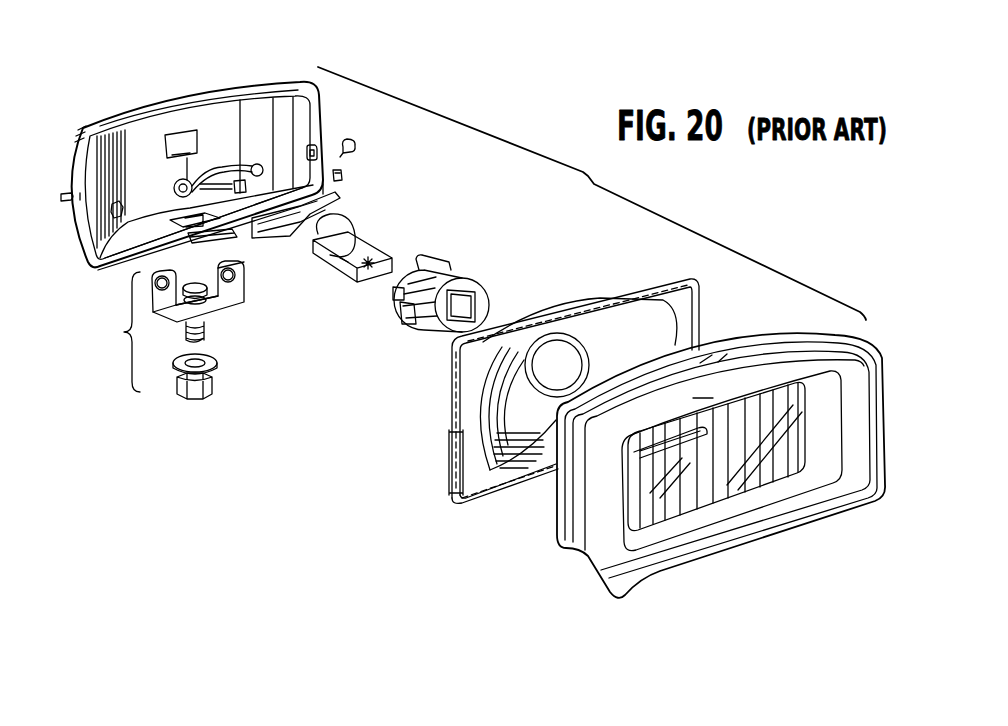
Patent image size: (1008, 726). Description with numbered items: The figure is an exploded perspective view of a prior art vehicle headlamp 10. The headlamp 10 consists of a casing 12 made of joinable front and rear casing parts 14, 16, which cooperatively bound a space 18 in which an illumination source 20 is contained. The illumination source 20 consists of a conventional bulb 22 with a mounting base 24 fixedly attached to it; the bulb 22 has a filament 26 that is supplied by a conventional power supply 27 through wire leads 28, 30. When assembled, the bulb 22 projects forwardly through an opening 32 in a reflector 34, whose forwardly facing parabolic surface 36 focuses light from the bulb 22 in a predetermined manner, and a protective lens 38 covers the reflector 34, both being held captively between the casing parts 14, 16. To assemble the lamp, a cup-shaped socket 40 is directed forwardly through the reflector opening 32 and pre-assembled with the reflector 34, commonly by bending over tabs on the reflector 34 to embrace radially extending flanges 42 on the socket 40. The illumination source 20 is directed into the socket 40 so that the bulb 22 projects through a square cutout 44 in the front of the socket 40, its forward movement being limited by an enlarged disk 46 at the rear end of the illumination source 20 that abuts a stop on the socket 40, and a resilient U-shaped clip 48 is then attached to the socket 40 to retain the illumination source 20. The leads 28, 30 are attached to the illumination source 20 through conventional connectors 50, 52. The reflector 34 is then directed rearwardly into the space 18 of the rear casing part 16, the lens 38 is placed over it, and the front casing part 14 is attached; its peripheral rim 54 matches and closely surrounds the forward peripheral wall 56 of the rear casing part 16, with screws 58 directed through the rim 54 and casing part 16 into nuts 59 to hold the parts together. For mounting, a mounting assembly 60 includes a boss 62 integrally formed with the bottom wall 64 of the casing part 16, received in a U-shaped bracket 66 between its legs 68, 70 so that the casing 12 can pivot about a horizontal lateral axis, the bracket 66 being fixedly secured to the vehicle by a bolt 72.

The vehicle headlamp 10 is at (552, 137).
The casing 12 is at (214, 87).
The front casing part 14 is at (716, 453).
The rear casing part 16 is at (153, 102).
The space 18 is at (302, 137).
The illumination source 20 is at (374, 231).
The bulb 22 is at (366, 277).
The mounting base 24 is at (347, 220).
The filament 26 is at (396, 262).
The power supply 27 is at (181, 155).
The wire lead 28 is at (194, 181).
The wire lead 30 is at (233, 168).
The opening 32 is at (554, 346).
The reflector 34 is at (490, 394).
The parabolic surface 36 is at (492, 451).
The protective lens 38 is at (731, 353).
The cup-shaped socket 40 is at (454, 278).
The radially extending flanges 42 is at (442, 260).
The square cutout 44 is at (468, 308).
The enlarged disk 46 is at (300, 262).
The U-shaped clip 48 is at (262, 240).
The connector 50 is at (335, 188).
The connector 52 is at (263, 160).
The peripheral rim 54 is at (719, 541).
The forward peripheral wall 56 is at (261, 165).
The screws 58 is at (63, 193).
The nuts 59 is at (118, 250).
The mounting assembly 60 is at (222, 352).
The boss 62 is at (230, 256).
The bottom wall 64 is at (130, 252).
The U-shaped bracket 66 is at (226, 312).
The leg 68 is at (168, 307).
The leg 70 is at (222, 296).
The bolt 72 is at (210, 338).